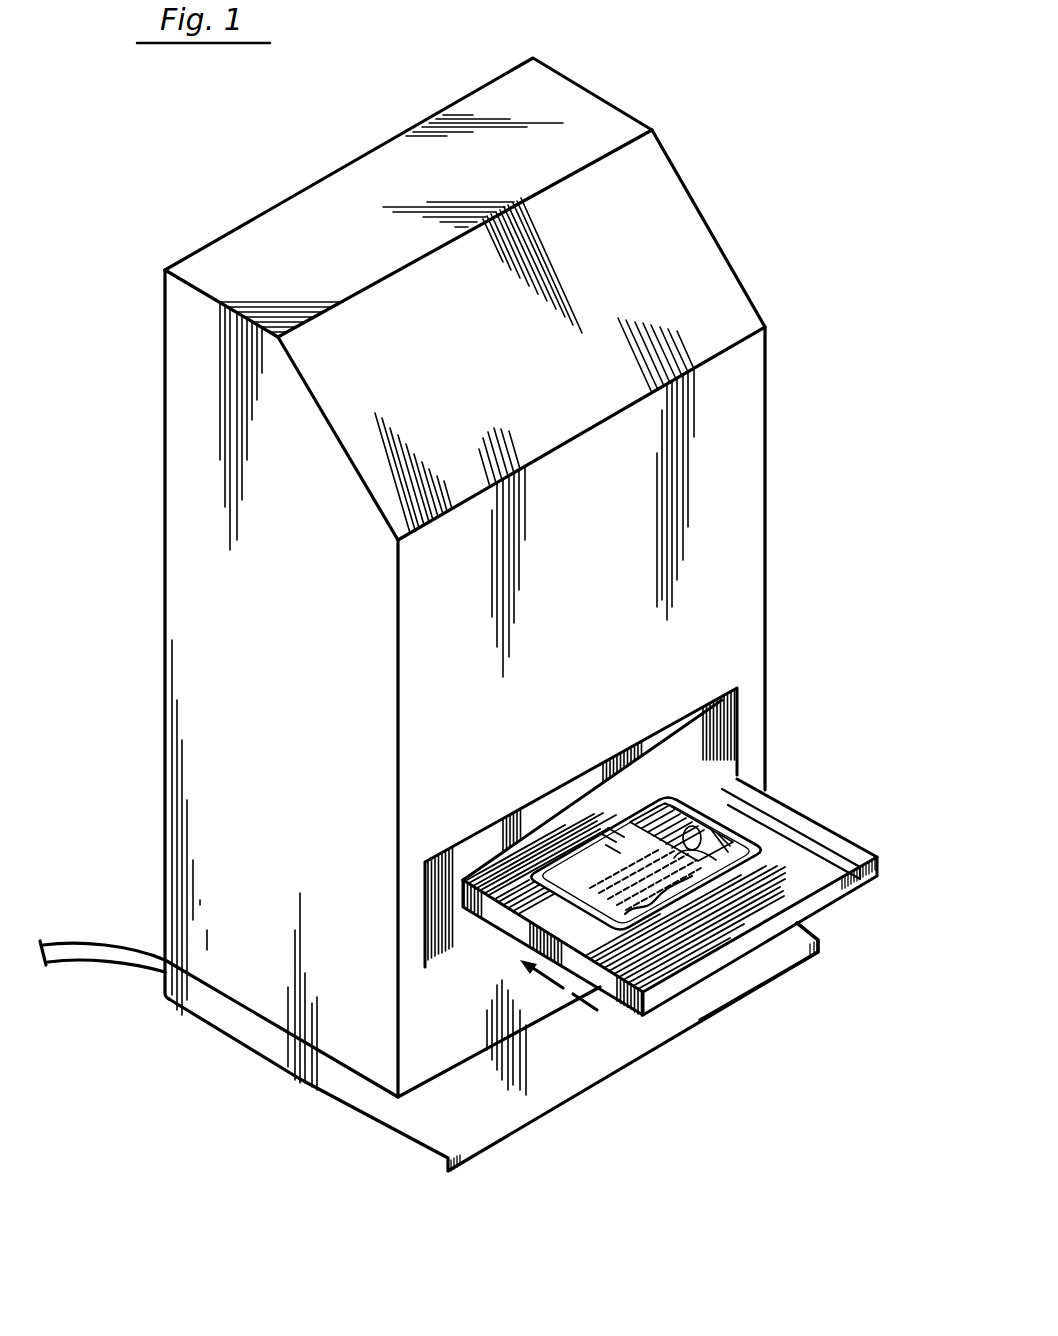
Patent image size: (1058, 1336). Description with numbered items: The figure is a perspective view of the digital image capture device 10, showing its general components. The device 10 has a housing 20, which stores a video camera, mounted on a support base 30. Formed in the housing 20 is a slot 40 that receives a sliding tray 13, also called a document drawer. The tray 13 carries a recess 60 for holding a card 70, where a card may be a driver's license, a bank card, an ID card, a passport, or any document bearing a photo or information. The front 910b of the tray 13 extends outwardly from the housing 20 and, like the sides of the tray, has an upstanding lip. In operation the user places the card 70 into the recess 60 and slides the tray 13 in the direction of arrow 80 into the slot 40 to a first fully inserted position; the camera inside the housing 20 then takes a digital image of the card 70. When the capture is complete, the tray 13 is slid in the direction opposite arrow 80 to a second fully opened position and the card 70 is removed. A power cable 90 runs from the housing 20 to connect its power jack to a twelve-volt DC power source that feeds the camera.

The digital image capture device 10 is at (727, 177).
The housing 20 is at (623, 105).
The support base 30 is at (465, 1112).
The formed slot 40 is at (657, 762).
The recess 60 is at (573, 843).
The card 70 is at (712, 807).
The sliding tray 13 is at (802, 873).
The arrow 80 is at (577, 1003).
The power cable 90 is at (90, 947).
The front of the tray 910b is at (720, 963).